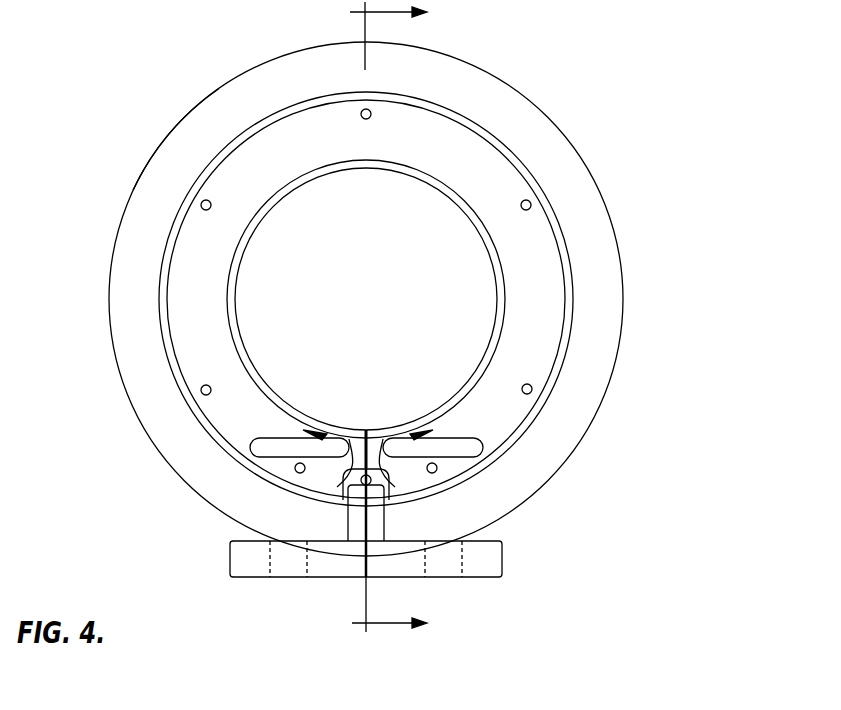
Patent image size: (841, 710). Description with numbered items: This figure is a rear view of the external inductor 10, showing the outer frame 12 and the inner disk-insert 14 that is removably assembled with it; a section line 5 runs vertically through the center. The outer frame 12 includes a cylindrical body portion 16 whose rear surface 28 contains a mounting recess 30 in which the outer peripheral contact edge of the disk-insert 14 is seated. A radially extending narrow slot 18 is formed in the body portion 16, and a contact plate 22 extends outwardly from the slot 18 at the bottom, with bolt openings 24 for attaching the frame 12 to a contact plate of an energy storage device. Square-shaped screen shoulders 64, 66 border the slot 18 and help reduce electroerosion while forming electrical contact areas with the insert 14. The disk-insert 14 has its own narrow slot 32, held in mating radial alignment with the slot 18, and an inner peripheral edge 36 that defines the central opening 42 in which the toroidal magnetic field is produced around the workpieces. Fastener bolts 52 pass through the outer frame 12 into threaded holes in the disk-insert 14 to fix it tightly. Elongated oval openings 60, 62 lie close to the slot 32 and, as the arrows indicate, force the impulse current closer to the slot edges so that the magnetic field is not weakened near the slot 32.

The section line 5- 5 is at (381, 321).
The external inductor assembly 10 is at (606, 103).
The outer frame portion 12 is at (612, 276).
The inner disk-insert 14 is at (174, 301).
The cylindrical body portion 16 is at (162, 138).
The narrow slot 18 is at (364, 537).
The contact plate 22 is at (248, 565).
The bolt openings 24 is at (285, 578).
The rear surface 28 is at (580, 413).
The mounting recess 30 is at (569, 239).
The narrow slot 32 is at (367, 430).
The inner peripheral edge 36 is at (367, 162).
The central opening 42 is at (263, 352).
The fastener bolts 52 is at (370, 112).
The elongated oval opening 60 is at (483, 448).
The elongated oval opening 62 is at (252, 447).
The screen shoulder 64 is at (445, 541).
The screen shoulder 66 is at (347, 533).